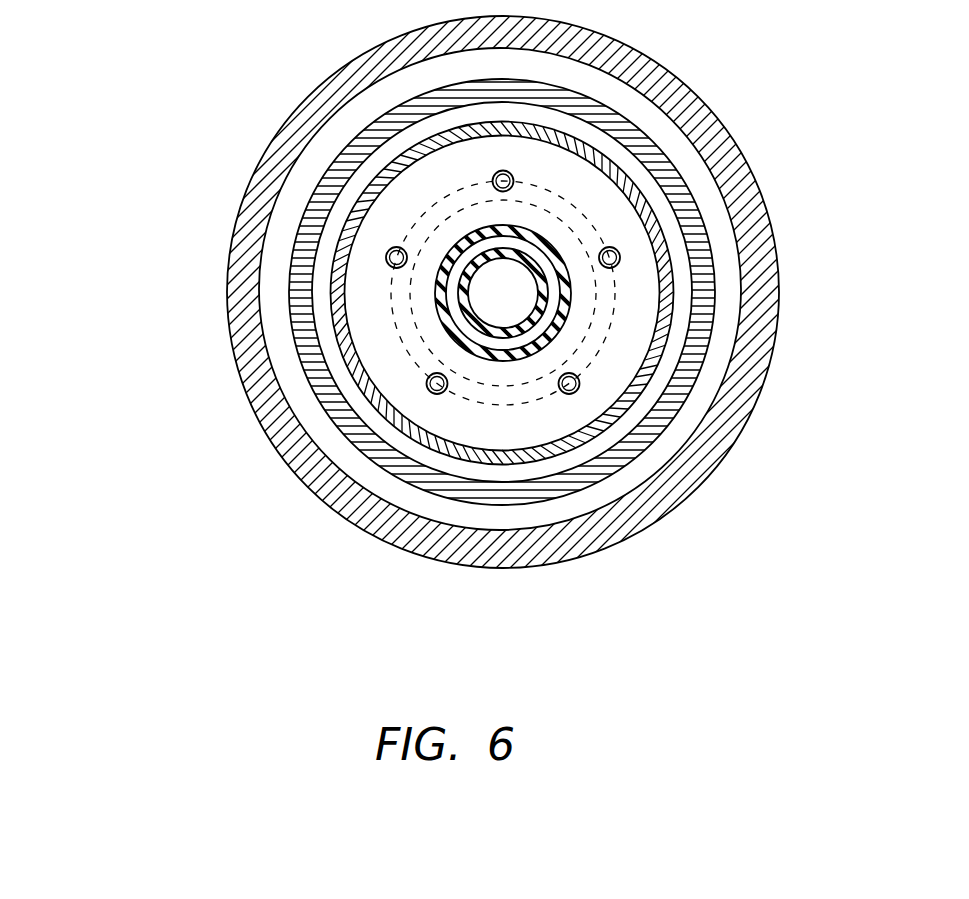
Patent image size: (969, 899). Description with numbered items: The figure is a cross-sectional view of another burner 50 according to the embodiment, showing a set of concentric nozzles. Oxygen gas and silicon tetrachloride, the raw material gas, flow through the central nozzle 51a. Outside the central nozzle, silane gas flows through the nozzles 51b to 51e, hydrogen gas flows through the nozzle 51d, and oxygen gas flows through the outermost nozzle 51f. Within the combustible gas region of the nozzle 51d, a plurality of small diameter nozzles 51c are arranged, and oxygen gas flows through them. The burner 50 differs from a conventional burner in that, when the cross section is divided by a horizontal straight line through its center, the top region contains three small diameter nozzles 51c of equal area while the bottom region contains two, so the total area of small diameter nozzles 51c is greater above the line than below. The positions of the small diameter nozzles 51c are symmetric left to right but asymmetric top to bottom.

The burner 50 is at (653, 66).
The central nozzle 51a is at (488, 275).
The nozzle 51b is at (436, 297).
The small diameter nozzles 51c is at (437, 385).
The nozzle 51d is at (447, 420).
The nozzle 51e is at (458, 468).
The outermost nozzle 51f is at (437, 515).